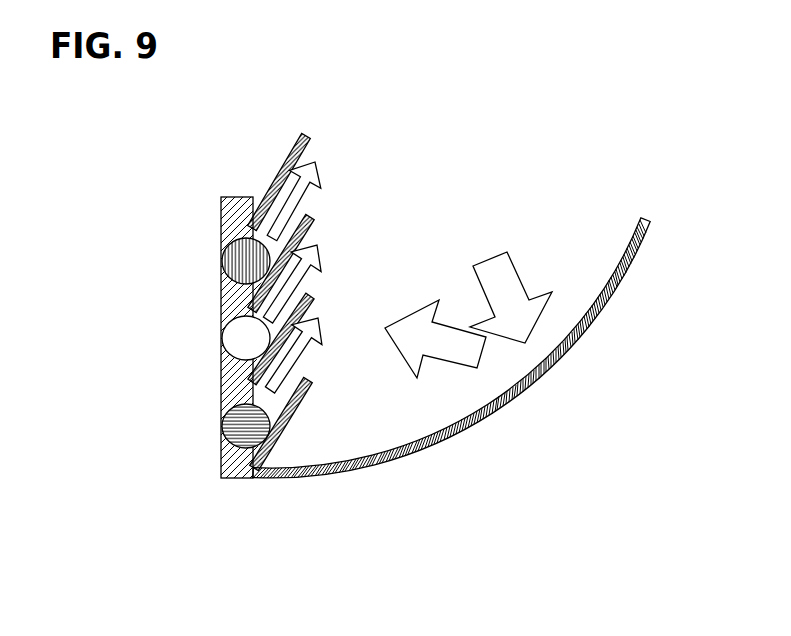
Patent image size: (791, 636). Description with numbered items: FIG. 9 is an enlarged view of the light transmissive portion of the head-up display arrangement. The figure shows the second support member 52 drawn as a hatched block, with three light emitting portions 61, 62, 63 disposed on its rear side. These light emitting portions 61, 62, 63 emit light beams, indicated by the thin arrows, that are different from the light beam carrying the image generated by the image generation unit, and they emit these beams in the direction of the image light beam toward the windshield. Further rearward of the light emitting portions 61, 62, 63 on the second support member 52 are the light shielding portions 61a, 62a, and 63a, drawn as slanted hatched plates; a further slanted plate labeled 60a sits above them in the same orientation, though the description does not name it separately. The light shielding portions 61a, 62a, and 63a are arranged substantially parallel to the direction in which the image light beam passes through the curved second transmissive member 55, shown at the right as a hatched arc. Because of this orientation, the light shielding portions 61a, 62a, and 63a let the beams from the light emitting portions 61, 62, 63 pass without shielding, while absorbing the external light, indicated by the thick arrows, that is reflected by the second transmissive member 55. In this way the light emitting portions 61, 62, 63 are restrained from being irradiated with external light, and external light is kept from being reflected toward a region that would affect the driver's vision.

The second support member 52 is at (233, 197).
The second transmissive member 55 is at (614, 303).
The guide plate 60a is at (308, 137).
The light shielding portion 61a is at (308, 214).
The light shielding portion 62a is at (308, 295).
The light shielding portion 63a is at (308, 379).
The light emitting portion 61 is at (221, 262).
The light emitting portion 62 is at (221, 337).
The light emitting portion 63 is at (221, 425).